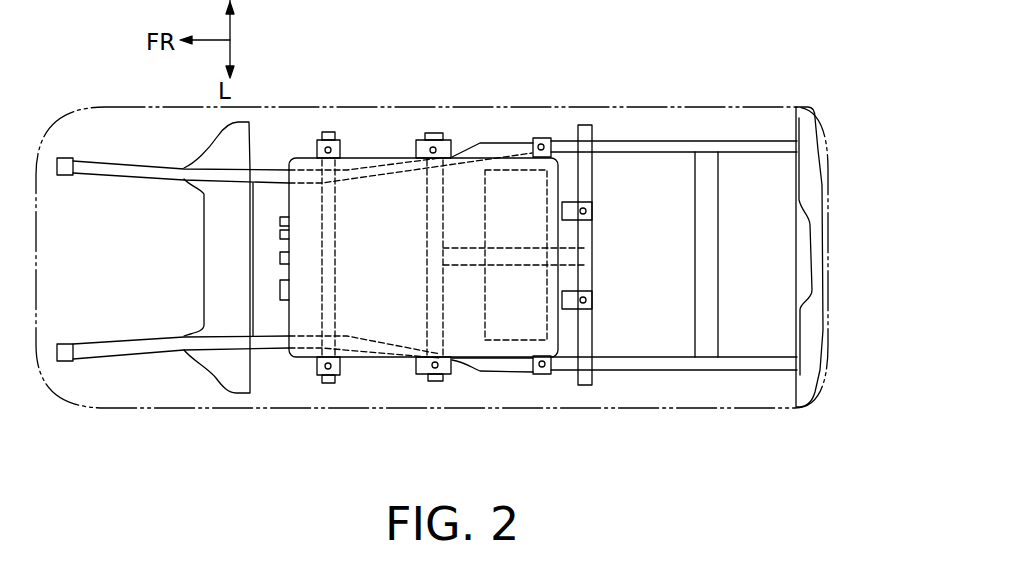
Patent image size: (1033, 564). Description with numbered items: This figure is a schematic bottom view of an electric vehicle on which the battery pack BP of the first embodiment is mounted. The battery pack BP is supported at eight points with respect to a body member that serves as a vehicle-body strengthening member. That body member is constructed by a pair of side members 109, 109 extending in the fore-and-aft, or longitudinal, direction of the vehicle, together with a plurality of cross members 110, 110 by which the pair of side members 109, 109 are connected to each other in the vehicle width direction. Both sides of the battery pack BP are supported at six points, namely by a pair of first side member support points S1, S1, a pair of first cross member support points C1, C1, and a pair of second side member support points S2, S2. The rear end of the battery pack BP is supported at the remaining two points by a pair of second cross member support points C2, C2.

The side member 109 is at (626, 141).
The cross member 110 is at (204, 258).
The battery pack BP is at (358, 148).
The first side member support point S1 is at (317, 142).
The first cross member support point C1 is at (421, 140).
The second side member support point S2 is at (541, 138).
The second cross member support point C2 is at (594, 211).